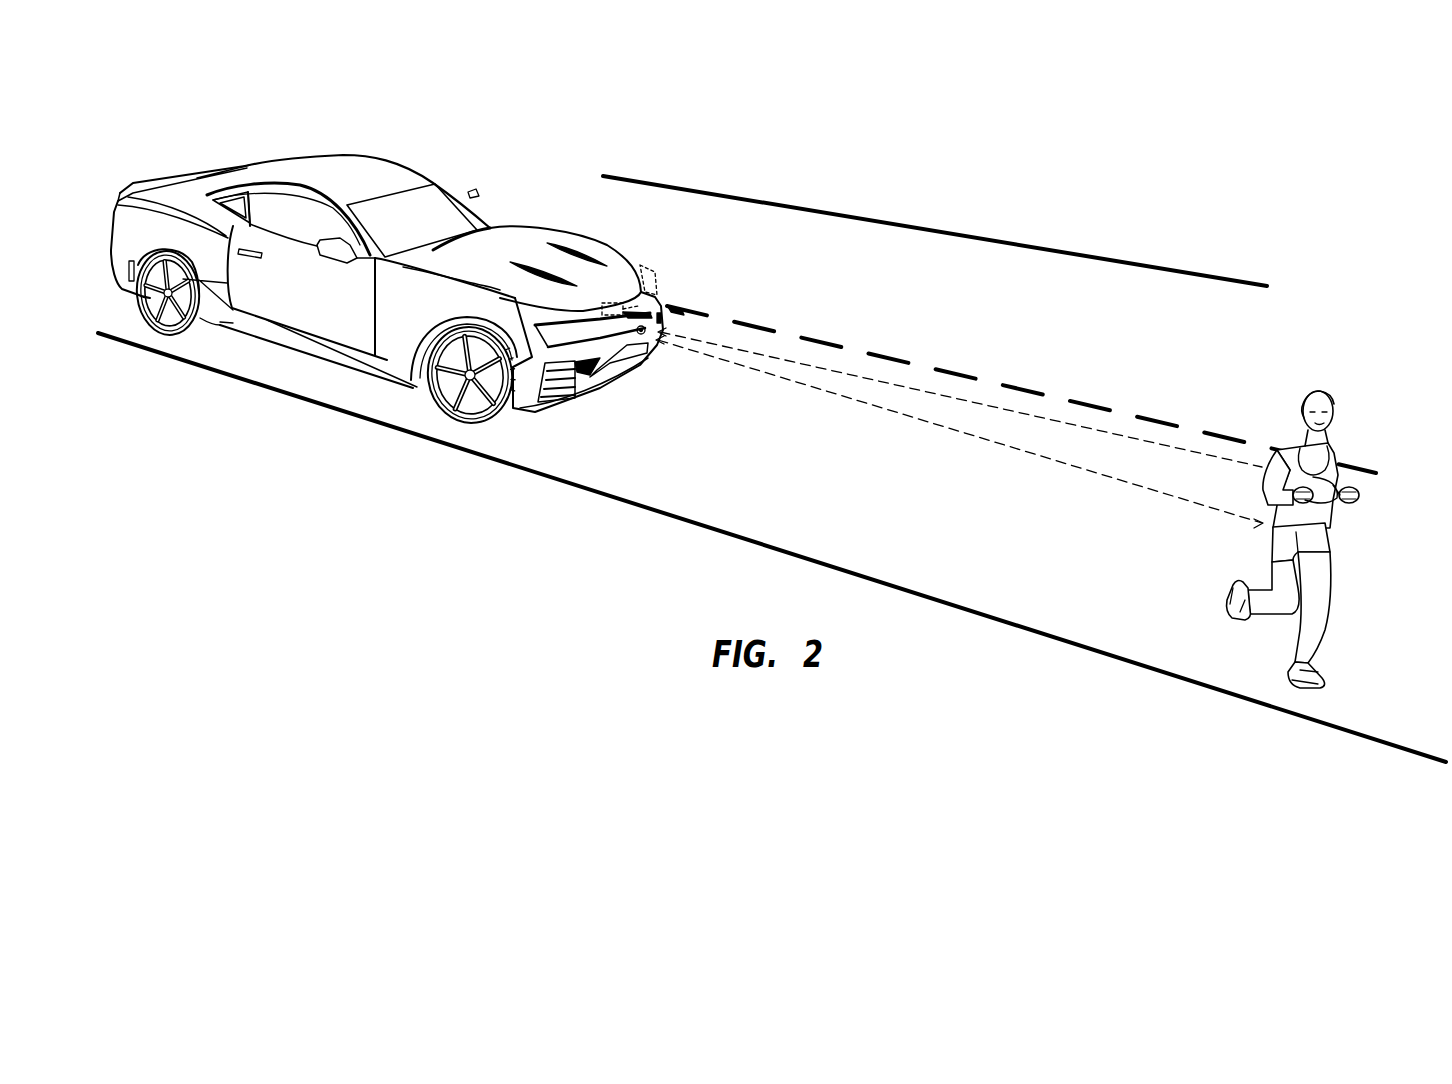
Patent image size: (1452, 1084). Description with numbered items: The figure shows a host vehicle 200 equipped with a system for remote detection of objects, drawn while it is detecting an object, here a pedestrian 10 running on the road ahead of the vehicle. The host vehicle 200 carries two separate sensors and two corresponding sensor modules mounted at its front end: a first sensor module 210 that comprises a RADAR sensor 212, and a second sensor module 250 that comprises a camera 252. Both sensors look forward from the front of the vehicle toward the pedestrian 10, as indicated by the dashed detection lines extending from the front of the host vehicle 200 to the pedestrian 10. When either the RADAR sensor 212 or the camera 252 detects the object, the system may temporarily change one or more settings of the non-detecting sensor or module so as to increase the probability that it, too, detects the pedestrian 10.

The host vehicle 200 is at (330, 175).
The first sensor module 210 is at (608, 305).
The second sensor module 250 is at (650, 275).
The camera 252 is at (665, 320).
The RADAR sensor 212 is at (653, 345).
The pedestrian 10 is at (1320, 543).